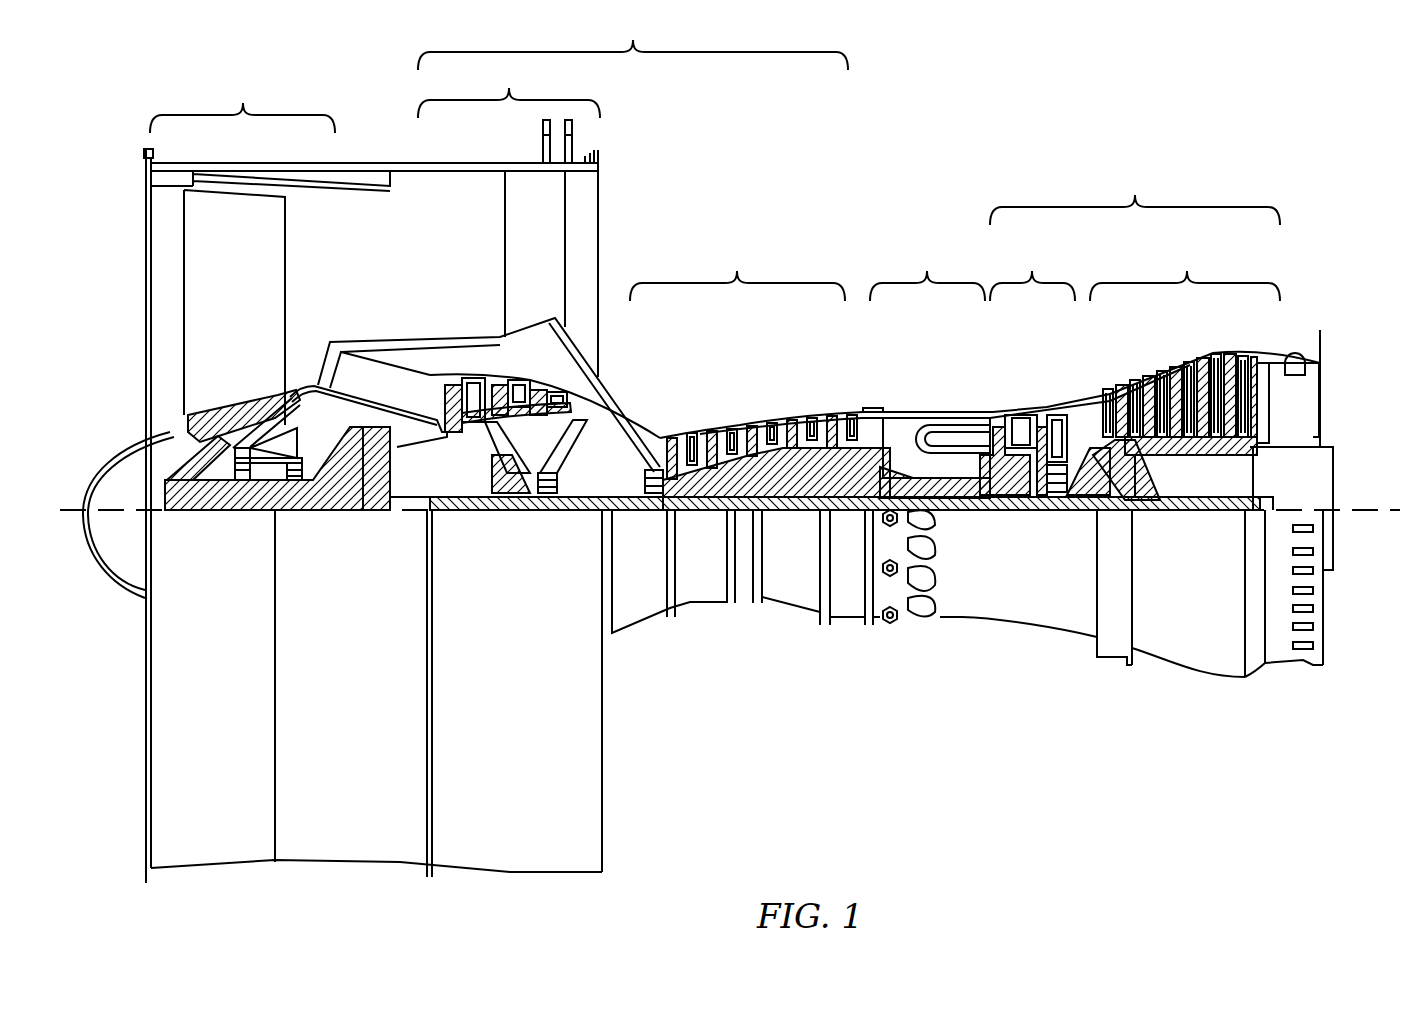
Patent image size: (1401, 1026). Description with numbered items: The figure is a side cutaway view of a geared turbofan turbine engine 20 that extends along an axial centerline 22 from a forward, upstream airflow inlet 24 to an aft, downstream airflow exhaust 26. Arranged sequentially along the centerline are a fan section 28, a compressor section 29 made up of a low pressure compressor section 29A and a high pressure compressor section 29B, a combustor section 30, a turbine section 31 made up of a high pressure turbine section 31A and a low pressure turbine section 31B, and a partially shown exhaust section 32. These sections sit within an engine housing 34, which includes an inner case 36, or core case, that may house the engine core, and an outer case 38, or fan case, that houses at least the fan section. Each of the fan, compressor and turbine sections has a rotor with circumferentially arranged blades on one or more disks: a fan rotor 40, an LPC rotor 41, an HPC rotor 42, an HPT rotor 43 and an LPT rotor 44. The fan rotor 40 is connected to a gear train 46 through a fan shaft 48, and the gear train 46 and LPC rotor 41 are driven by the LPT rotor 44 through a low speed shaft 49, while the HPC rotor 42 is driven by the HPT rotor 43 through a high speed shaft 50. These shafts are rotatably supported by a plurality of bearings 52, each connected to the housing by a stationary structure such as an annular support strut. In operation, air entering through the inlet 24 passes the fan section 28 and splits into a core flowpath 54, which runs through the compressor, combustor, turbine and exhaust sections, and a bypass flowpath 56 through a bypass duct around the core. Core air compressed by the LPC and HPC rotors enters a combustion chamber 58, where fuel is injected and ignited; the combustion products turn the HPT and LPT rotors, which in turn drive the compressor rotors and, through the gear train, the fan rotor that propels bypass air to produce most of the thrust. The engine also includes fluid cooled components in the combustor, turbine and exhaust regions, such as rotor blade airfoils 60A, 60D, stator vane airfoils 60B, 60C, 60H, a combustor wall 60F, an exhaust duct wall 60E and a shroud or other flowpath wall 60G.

The turbofan turbine engine 20 is at (110, 141).
The axial centerline 22 is at (1384, 517).
The airflow inlet 24 is at (147, 238).
The airflow exhaust 26 is at (1323, 397).
The fan section 28 is at (376, 476).
The compressor section 29 is at (633, 40).
The low pressure compressor (LPC) section 29A is at (489, 266).
The high pressure compressor (HPC) section 29B is at (760, 361).
The combustor section 30 is at (990, 372).
The turbine section 31 is at (1135, 192).
The high pressure turbine (HPT) section 31A is at (1050, 370).
The low pressure turbine (LPT) section 31B is at (1205, 373).
The exhaust section 32 is at (1322, 290).
The engine housing 34 is at (634, 652).
The inner case 36 is at (847, 618).
The outer case 38 is at (552, 873).
The fan rotor 40 is at (188, 432).
The LPC rotor 41 is at (502, 453).
The HPC rotor 42 is at (783, 467).
The HPT rotor 43 is at (1030, 498).
The LPT rotor 44 is at (1177, 450).
The gear train 46 is at (378, 513).
The fan shaft 48 is at (222, 514).
The low speed shaft 49 is at (1190, 512).
The high speed shaft 50 is at (975, 512).
The bearings 52 is at (243, 480).
The core flowpath 54 is at (628, 425).
The bypass flowpath 56 is at (391, 272).
The combustion chamber 58 is at (970, 427).
The rotor blade airfoil 60A is at (1043, 420).
The stator vane airfoil 60B is at (1000, 497).
The stator vane airfoil 60C is at (1110, 403).
The rotor blade airfoil 60D is at (1153, 510).
The exhaust duct wall 60E is at (1288, 375).
The combustor wall 60F is at (940, 437).
The shroud or other flowpath wall 60G is at (1073, 440).
The stator vane airfoil 60H is at (1087, 440).